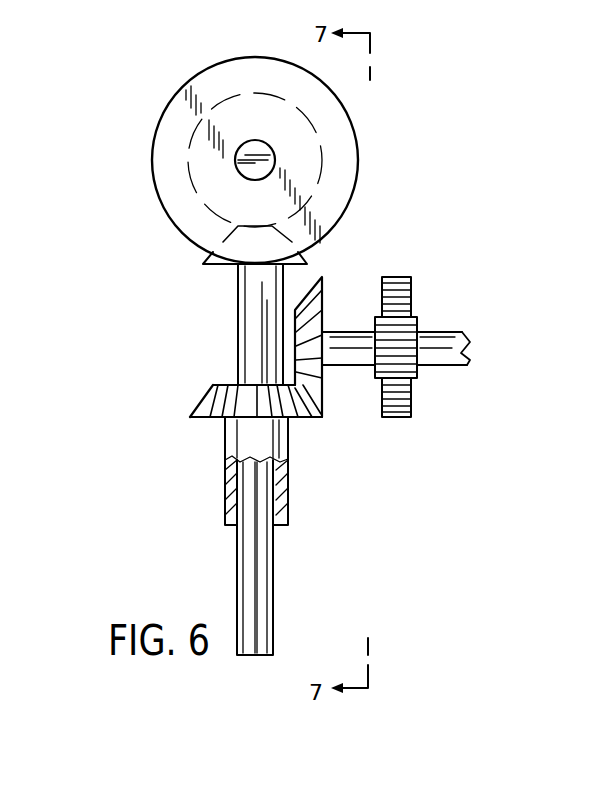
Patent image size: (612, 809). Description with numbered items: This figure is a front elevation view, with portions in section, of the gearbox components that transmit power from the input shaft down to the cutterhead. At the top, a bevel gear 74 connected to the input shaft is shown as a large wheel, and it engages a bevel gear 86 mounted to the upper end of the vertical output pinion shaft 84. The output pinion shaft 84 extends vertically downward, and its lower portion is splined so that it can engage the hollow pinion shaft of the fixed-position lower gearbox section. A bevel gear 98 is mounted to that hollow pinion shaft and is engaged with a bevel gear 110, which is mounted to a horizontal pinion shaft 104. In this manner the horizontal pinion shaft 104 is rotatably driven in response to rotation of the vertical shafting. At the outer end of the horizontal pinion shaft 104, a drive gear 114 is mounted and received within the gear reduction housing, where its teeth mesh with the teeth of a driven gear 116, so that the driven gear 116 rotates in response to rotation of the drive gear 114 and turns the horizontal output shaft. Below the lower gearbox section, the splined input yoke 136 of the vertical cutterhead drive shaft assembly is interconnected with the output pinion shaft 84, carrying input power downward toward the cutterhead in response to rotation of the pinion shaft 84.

The bevel gear 74 is at (150, 163).
The bevel gear 86 is at (208, 264).
The output pinion shaft 84 is at (238, 323).
The bevel gear 98 is at (203, 393).
The bevel gear 110 is at (312, 288).
The horizontal pinion shaft 104 is at (335, 332).
The drive gear 114 is at (420, 350).
The driven gear 116 is at (412, 287).
The splined input yoke 136 is at (277, 572).